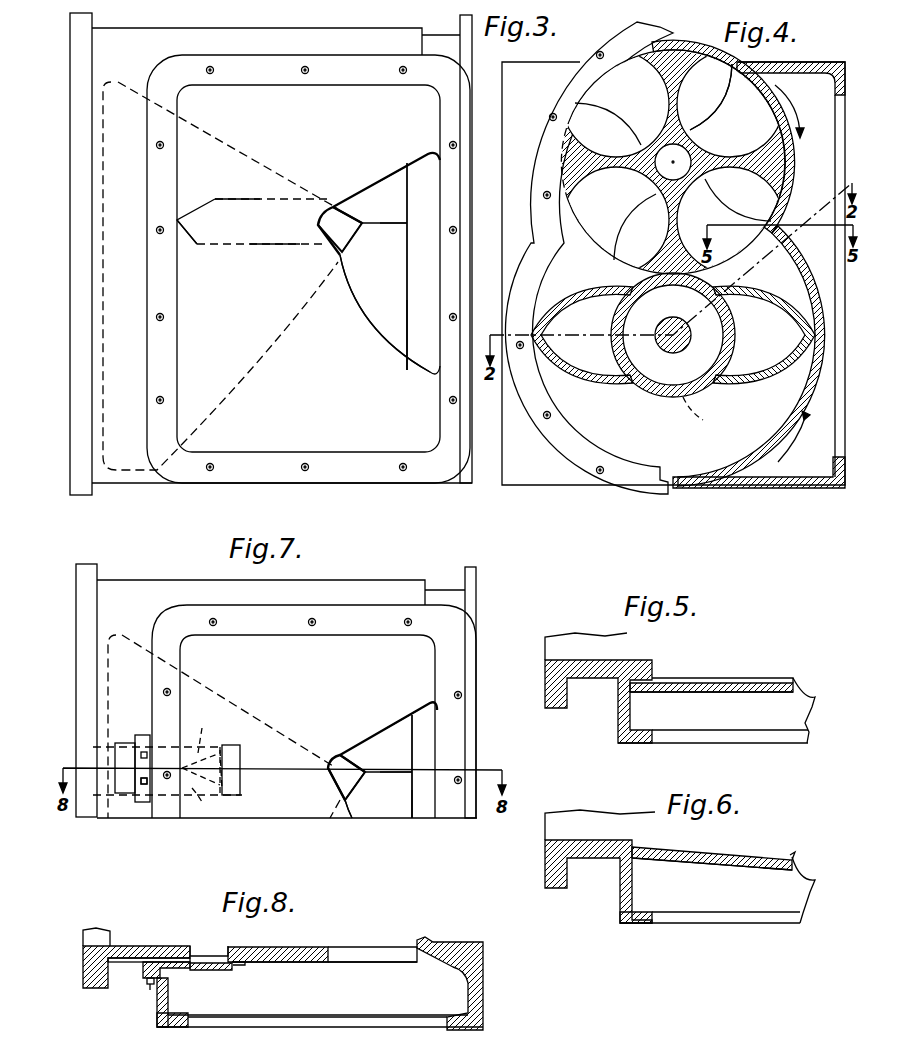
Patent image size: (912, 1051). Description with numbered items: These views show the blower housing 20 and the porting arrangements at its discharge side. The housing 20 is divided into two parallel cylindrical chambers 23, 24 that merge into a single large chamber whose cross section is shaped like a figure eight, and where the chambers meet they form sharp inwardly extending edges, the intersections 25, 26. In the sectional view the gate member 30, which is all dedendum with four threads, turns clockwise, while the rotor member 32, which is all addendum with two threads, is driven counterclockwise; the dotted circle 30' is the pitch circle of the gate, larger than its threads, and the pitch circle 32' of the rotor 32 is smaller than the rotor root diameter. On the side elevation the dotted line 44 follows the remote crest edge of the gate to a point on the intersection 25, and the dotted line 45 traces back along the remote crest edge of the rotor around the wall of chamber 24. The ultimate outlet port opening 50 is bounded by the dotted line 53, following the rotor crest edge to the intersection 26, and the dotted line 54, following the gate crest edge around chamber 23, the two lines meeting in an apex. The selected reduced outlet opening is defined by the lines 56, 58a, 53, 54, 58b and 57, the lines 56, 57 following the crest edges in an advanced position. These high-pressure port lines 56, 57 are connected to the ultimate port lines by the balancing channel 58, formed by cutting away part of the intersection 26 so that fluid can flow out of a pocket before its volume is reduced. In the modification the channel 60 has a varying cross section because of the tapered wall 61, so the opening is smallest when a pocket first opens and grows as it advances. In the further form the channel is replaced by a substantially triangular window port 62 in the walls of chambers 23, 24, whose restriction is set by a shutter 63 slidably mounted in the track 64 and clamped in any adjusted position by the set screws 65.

In FIG. 3, the housing 20 is at (140, 61).
In FIG. 4, the housing 20 is at (540, 476).
In FIG. 7, the housing 20 is at (141, 611).
In FIG. 8, the housing 20 is at (91, 1021).
In FIG. 5, the housing 20 is at (620, 704).
In FIG. 6, the housing 20 is at (620, 890).
In FIG. 3, the cylindrical chamber 23 is at (407, 190).
In FIG. 4, the cylindrical chamber 23 is at (584, 115).
In FIG. 7, the cylindrical chamber 23 is at (412, 724).
In FIG. 3, the cylindrical chamber 24 is at (393, 328).
In FIG. 4, the cylindrical chamber 24 is at (620, 457).
In FIG. 7, the cylindrical chamber 24 is at (393, 806).
In FIG. 8, the cylindrical chamber 24 is at (125, 947).
In FIG. 5, the cylindrical chamber 24 is at (613, 661).
In FIG. 6, the cylindrical chamber 24 is at (608, 837).
In FIG. 3, the intersection edge 25 is at (395, 226).
In FIG. 4, the intersection edge 25 is at (569, 221).
In FIG. 7, the intersection edge 25 is at (395, 774).
In FIG. 4, the intersection edge 26 is at (785, 211).
In FIG. 8, the intersection edge 26 is at (260, 947).
In FIG. 5, the intersection edge 26 is at (627, 662).
In FIG. 6, the intersection edge 26 is at (630, 845).
In FIG. 4, the gate member 30 is at (673, 162).
In FIG. 4, the pitch circle of gate 30' is at (759, 122).
In FIG. 4, the rotor member 32 is at (673, 351).
In FIG. 4, the pitch circle of rotor 32' is at (706, 420).
In FIG. 3, the dotted line 44 is at (237, 149).
In FIG. 7, the dotted line 44 is at (205, 662).
In FIG. 3, the dotted line 45 is at (345, 248).
In FIG. 7, the dotted line 45 is at (349, 788).
In FIG. 3, the outlet port opening 50 is at (280, 436).
In FIG. 7, the outlet port opening 50 is at (334, 670).
In FIG. 8, the outlet port opening 50 is at (390, 1007).
In FIG. 5, the outlet port opening 50 is at (763, 725).
In FIG. 6, the outlet port opening 50 is at (743, 903).
In FIG. 3, the dotted line 53 is at (185, 233).
In FIG. 7, the dotted line 53 is at (193, 791).
In FIG. 8, the dotted line 53 is at (193, 947).
In FIG. 3, the dotted line 54 is at (196, 206).
In FIG. 7, the dotted line 54 is at (196, 740).
In FIG. 3, the port line 56 is at (360, 305).
In FIG. 7, the port line 56 is at (348, 816).
In FIG. 8, the port line 56 is at (380, 952).
In FIG. 5, the port line 56 is at (818, 680).
In FIG. 6, the port line 56 is at (822, 867).
In FIG. 3, the port line 57 is at (394, 173).
In FIG. 7, the port line 57 is at (396, 722).
In FIG. 4, the balancing channel 58 is at (787, 240).
In FIG. 5, the balancing channel 58 is at (728, 680).
In FIG. 3, the dotted line 58a is at (282, 243).
In FIG. 3, the dotted line 58b is at (255, 200).
In FIG. 6, the tapered channel 60 is at (792, 857).
In FIG. 6, the tapered wall 61 is at (720, 861).
In FIG. 7, the window port 62 is at (241, 752).
In FIG. 8, the window port 62 is at (210, 947).
In FIG. 7, the shutter 63 is at (222, 747).
In FIG. 8, the shutter 63 is at (215, 970).
In FIG. 7, the track 64 is at (122, 742).
In FIG. 8, the track 64 is at (120, 963).
In FIG. 7, the set screws 65 is at (143, 786).
In FIG. 8, the set screws 65 is at (150, 985).